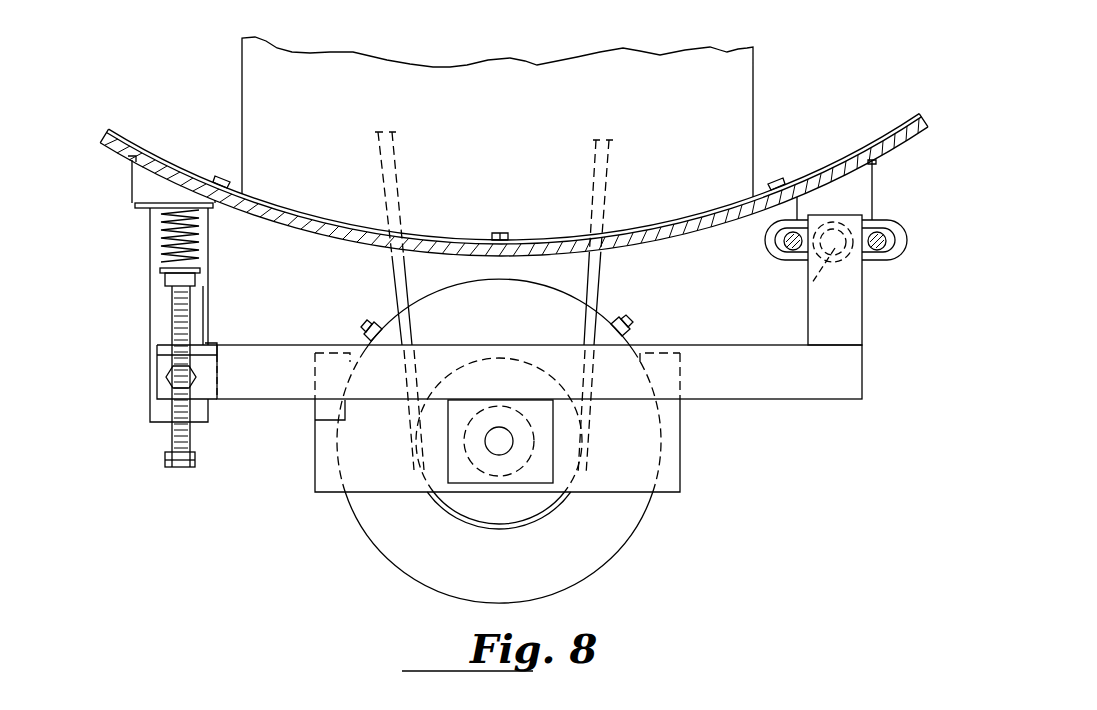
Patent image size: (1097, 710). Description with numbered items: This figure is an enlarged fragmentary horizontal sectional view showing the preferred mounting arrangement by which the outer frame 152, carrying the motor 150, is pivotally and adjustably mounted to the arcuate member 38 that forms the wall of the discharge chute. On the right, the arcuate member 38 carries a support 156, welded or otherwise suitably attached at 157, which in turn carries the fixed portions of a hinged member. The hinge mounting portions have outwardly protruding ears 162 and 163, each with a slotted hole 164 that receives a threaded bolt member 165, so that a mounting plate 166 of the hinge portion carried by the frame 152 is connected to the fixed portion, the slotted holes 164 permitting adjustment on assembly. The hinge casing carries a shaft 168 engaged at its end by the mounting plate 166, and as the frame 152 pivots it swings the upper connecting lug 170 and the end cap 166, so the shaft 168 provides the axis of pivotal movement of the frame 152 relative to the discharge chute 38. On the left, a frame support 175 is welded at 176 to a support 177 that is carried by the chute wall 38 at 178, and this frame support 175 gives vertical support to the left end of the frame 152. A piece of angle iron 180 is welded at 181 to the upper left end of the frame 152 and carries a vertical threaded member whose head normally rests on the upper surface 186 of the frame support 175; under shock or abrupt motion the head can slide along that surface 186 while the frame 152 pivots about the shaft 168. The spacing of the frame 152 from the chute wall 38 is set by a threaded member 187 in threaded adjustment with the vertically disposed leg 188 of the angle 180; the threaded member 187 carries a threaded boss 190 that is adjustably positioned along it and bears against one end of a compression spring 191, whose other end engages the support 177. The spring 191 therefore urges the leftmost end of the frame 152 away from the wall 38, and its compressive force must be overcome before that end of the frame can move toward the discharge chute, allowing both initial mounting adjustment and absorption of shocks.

The arcuate member 38 is at (828, 172).
The motor 150 is at (403, 522).
The outer frame 152 is at (773, 393).
The support 156 is at (863, 187).
The weld location 157 is at (876, 160).
The ear 162 is at (763, 241).
The ear 163 is at (903, 232).
The slotted hole 164 is at (893, 243).
The threaded bolt member 165 is at (880, 247).
The mounting plate 166 is at (870, 226).
The shaft 168 is at (808, 290).
The upper connecting lug 170 is at (853, 315).
The frame support 175 is at (150, 322).
The weld location 176 is at (150, 205).
The support 177 is at (143, 188).
The attachment location 178 is at (132, 155).
The angle iron 180 is at (203, 383).
The weld location 181 is at (212, 343).
The upper surface 186 is at (202, 292).
The threaded member 187 is at (172, 440).
The vertically disposed leg 188 is at (165, 348).
The threaded boss 190 is at (167, 278).
The compression spring 191 is at (195, 230).